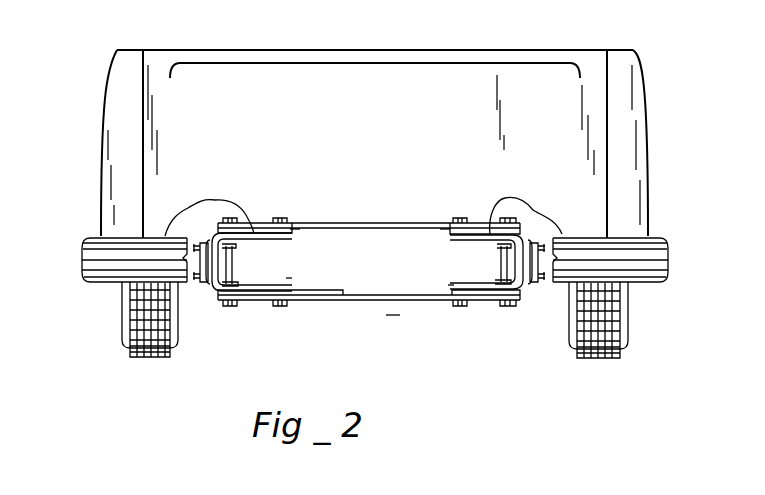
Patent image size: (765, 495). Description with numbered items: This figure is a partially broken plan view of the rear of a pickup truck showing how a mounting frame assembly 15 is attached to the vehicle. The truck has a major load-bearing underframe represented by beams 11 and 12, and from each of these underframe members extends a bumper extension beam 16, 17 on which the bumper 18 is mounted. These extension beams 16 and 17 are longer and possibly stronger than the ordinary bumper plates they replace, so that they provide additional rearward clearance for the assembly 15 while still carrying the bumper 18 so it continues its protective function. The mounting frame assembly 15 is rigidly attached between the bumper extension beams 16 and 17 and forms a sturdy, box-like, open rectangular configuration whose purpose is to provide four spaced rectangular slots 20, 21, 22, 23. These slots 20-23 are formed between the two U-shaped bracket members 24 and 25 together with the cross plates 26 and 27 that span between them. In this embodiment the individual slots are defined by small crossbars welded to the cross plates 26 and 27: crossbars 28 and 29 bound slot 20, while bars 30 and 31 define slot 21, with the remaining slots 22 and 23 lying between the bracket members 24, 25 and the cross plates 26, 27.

The beam 11 is at (238, 279).
The beam 12 is at (500, 280).
The mounting frame assembly 15 is at (393, 318).
The bumper extension beam 16 is at (208, 292).
The bumper extension beam 17 is at (533, 292).
The bumper 18 is at (86, 258).
The rectangular slot 20 is at (282, 191).
The rectangular slot 21 is at (477, 221).
The rectangular slot 22 is at (256, 303).
The rectangular slot 23 is at (481, 300).
The U-shaped bracket member 24 is at (290, 279).
The U-shaped bracket member 25 is at (447, 285).
The cross plate 26 is at (343, 224).
The cross plate 27 is at (343, 301).
The crossbar 28 is at (216, 233).
The crossbar 29 is at (290, 231).
The bar 30 is at (446, 232).
The bar 31 is at (524, 230).